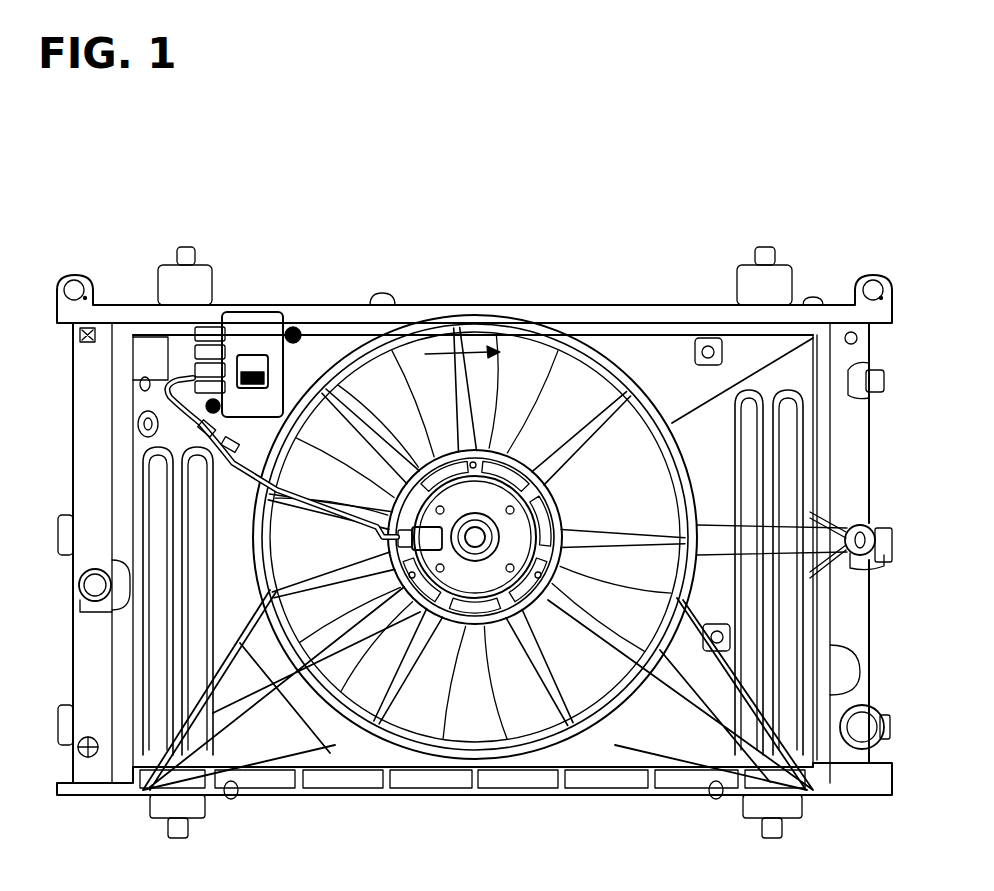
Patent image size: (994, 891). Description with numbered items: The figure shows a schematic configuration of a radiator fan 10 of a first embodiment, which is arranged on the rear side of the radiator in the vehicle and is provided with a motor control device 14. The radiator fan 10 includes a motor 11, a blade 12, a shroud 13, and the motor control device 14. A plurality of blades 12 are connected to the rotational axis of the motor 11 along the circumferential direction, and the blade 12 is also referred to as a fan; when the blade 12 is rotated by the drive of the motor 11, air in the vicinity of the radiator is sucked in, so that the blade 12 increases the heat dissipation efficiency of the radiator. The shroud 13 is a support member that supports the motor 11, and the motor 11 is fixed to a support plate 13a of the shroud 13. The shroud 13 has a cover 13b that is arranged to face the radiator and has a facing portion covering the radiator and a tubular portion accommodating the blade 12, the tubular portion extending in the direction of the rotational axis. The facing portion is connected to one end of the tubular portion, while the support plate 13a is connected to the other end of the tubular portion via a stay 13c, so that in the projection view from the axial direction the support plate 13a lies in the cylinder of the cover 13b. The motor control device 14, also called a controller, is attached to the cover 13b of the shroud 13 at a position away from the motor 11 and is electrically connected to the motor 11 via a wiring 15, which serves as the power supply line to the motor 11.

The radiator fan 10 is at (887, 276).
The motor 11 is at (497, 500).
The blade 12 is at (404, 372).
The shroud 13 is at (514, 316).
The support plate 13a is at (488, 622).
The cover 13b is at (642, 355).
The stay 13c is at (350, 400).
The motor control device 14 is at (248, 342).
The wiring 15 is at (137, 445).